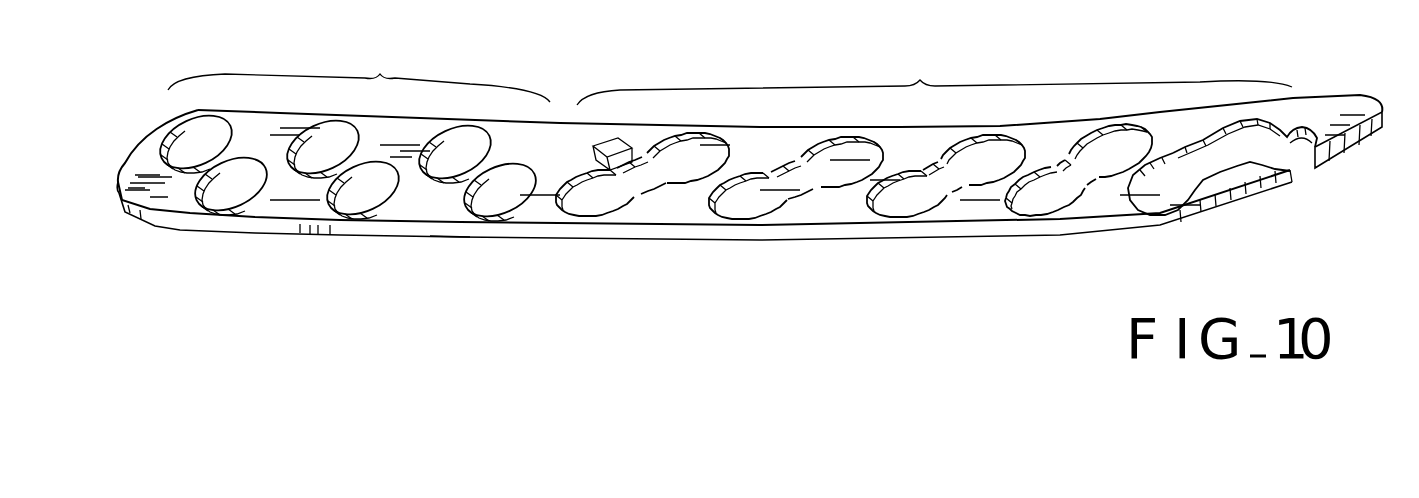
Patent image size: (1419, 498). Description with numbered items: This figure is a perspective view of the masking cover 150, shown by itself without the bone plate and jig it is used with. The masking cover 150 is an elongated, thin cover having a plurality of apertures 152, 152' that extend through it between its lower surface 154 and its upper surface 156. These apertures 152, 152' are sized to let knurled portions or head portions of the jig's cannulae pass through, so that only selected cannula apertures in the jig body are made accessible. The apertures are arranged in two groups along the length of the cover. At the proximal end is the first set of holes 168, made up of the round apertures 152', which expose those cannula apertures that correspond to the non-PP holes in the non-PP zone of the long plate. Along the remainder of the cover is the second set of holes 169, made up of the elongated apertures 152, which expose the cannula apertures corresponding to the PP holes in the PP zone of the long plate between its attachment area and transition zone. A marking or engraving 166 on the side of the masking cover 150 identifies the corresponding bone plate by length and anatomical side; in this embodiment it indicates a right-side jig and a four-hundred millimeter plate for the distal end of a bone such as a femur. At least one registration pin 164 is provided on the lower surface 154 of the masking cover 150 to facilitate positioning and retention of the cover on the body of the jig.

The masking cover 150 is at (565, 75).
The aperture 152 is at (936, 215).
The aperture 152' is at (348, 197).
The lower surface 154 is at (147, 187).
The upper surface 156 is at (445, 238).
The registration pin 164 is at (612, 143).
The marking or engraving 166 is at (727, 237).
The first set of holes 168 is at (359, 74).
The second set of holes 169 is at (934, 76).